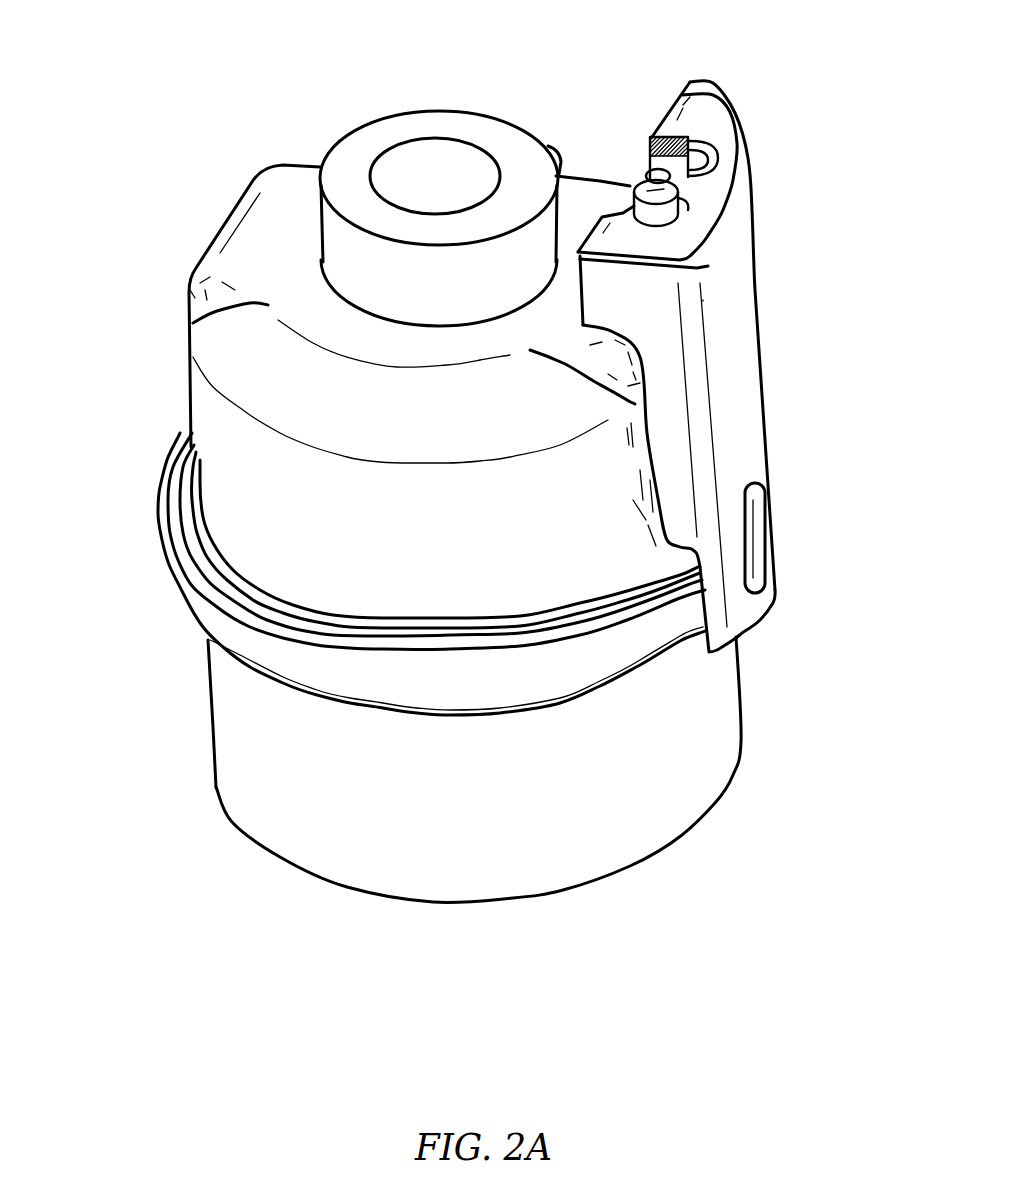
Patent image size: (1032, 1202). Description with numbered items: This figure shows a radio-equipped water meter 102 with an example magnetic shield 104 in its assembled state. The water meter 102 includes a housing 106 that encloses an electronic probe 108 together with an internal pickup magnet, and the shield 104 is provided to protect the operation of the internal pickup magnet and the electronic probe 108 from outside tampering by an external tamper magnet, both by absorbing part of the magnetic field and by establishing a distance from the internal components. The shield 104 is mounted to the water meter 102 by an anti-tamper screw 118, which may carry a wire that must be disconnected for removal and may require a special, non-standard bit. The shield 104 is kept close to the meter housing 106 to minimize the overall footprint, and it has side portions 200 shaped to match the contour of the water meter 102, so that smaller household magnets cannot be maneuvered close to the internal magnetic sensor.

The water meter 102 is at (247, 823).
The magnetic shield 104 is at (733, 303).
The housing 106 is at (212, 435).
The electronic probe 108 is at (633, 180).
The anti-tamper screw 118 is at (657, 132).
The side portions 200 is at (667, 390).